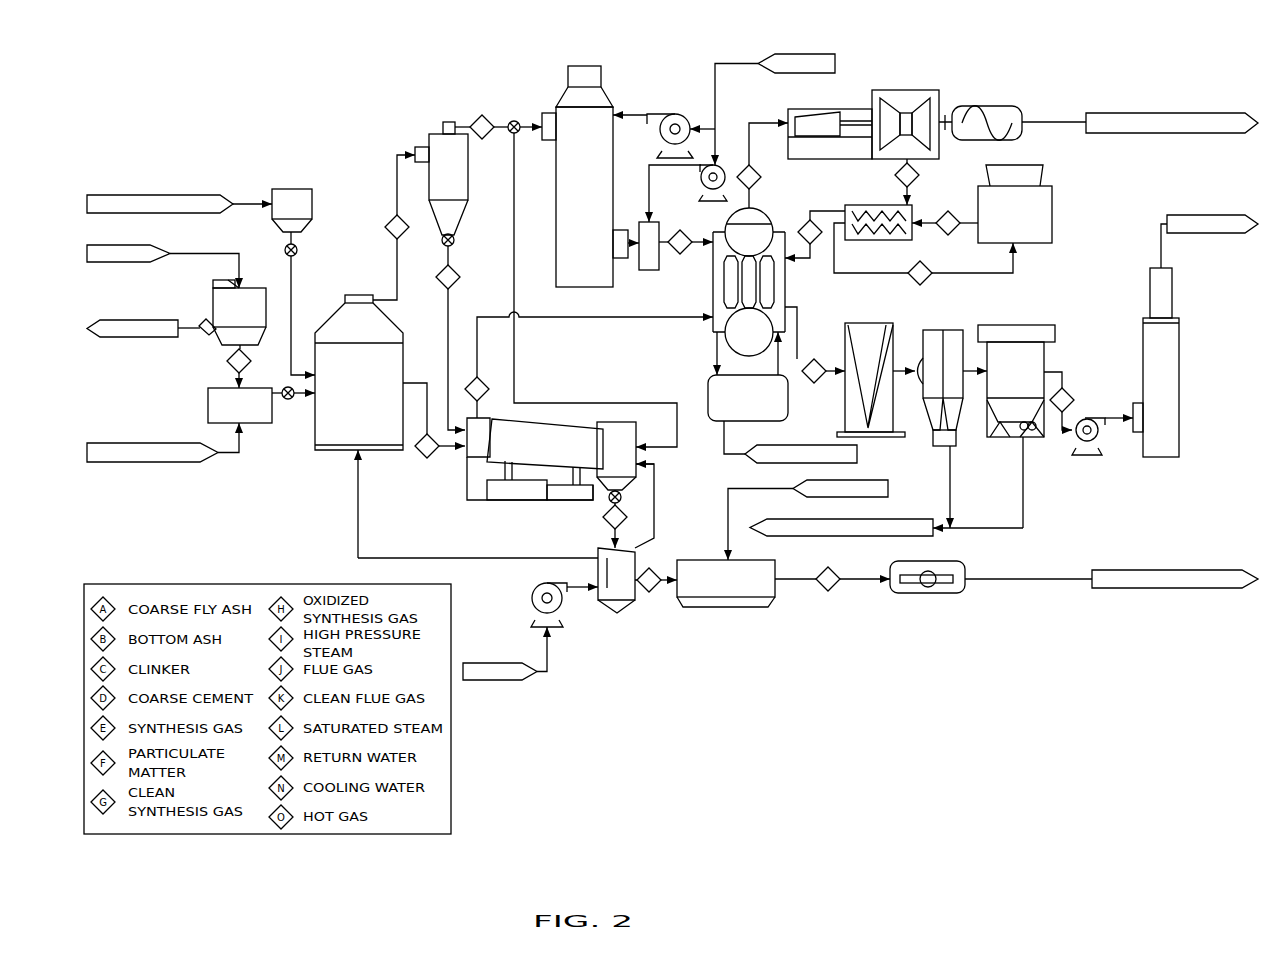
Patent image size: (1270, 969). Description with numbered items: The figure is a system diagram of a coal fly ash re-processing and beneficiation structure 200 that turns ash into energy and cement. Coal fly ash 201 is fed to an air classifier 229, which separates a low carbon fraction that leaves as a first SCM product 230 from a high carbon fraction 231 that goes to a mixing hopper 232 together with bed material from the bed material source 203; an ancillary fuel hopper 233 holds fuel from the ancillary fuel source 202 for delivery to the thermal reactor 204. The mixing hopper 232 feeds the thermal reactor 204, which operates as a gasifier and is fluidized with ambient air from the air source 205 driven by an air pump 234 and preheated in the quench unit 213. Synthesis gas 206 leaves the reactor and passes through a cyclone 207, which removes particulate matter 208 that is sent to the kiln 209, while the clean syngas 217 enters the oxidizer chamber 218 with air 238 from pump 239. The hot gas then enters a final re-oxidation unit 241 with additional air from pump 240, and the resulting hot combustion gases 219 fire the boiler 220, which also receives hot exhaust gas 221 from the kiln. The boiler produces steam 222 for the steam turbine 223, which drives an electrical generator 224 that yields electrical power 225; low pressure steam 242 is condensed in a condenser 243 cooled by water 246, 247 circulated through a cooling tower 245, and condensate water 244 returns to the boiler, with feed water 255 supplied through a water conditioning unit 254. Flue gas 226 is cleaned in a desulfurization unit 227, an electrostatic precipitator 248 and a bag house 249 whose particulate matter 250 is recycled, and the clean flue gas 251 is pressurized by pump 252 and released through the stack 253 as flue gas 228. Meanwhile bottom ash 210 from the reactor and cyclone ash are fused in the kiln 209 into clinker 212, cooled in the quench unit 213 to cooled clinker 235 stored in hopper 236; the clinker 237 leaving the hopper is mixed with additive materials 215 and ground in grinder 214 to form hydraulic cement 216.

The coal fly ash re-processing and beneficiation structure 200 is at (738, 746).
The coal fly ash 201 is at (150, 245).
The ancillary fuel source 202 is at (152, 195).
The bed material source 203 is at (152, 443).
The thermal reactor 204 is at (343, 452).
The ambient air source 205 is at (503, 680).
The synthesis gas 206 is at (388, 222).
The cyclone 207 is at (446, 134).
The particulate matter 208 is at (454, 272).
The kiln 209 is at (532, 502).
The bottom ash 210 is at (421, 452).
The clinker 212 is at (604, 518).
The quench unit 213 is at (612, 608).
The grinder 214 is at (905, 593).
The additive materials 215 is at (868, 480).
The hydraulic cement 216 is at (1148, 588).
The clean syngas 217 is at (482, 115).
The oxidizer chamber 218 is at (566, 95).
The hot combustion gases 219 is at (680, 256).
The boiler 220 is at (710, 322).
The hot exhaust gas 221 is at (481, 380).
The steam 222 is at (761, 177).
The steam turbine 223 is at (808, 110).
The electrical generator 224 is at (990, 106).
The electrical power 225 is at (1185, 113).
The flue gas 226 is at (810, 383).
The flue gas desulfurization unit 227 is at (853, 322).
The flue gas output 228 is at (1190, 214).
The air classifier 229 is at (213, 300).
The first SCM product 230 is at (148, 320).
The high carbon CFA fraction and ancillary fuel mixture 231 is at (228, 358).
The mixing hopper 232 is at (208, 404).
The ancillary fuel hopper 233 is at (308, 225).
The air pump 234 is at (532, 603).
The cooled clinker particles 235 is at (655, 570).
The hopper 236 is at (710, 607).
The clinker exiting the hopper 237 is at (820, 587).
The air 238 is at (775, 55).
The pump 239 is at (665, 112).
The pump 240 is at (713, 200).
The final re-oxidation unit 241 is at (657, 272).
The low pressure steam 242 is at (895, 175).
The condenser 243 is at (873, 240).
The condensate water 244 is at (818, 246).
The cooling tower 245 is at (1052, 190).
The cooling water 246 is at (940, 215).
The cooling water 247 is at (912, 276).
The electrostatic precipitator 248 is at (945, 330).
The bag house 249 is at (1018, 325).
The bag house particulate matter 250 is at (838, 536).
The clean flue gas 251 is at (1068, 393).
The pump 252 is at (1075, 447).
The stack 253 is at (1145, 330).
The water conditioning unit 254 is at (708, 390).
The feed water 255 is at (757, 455).